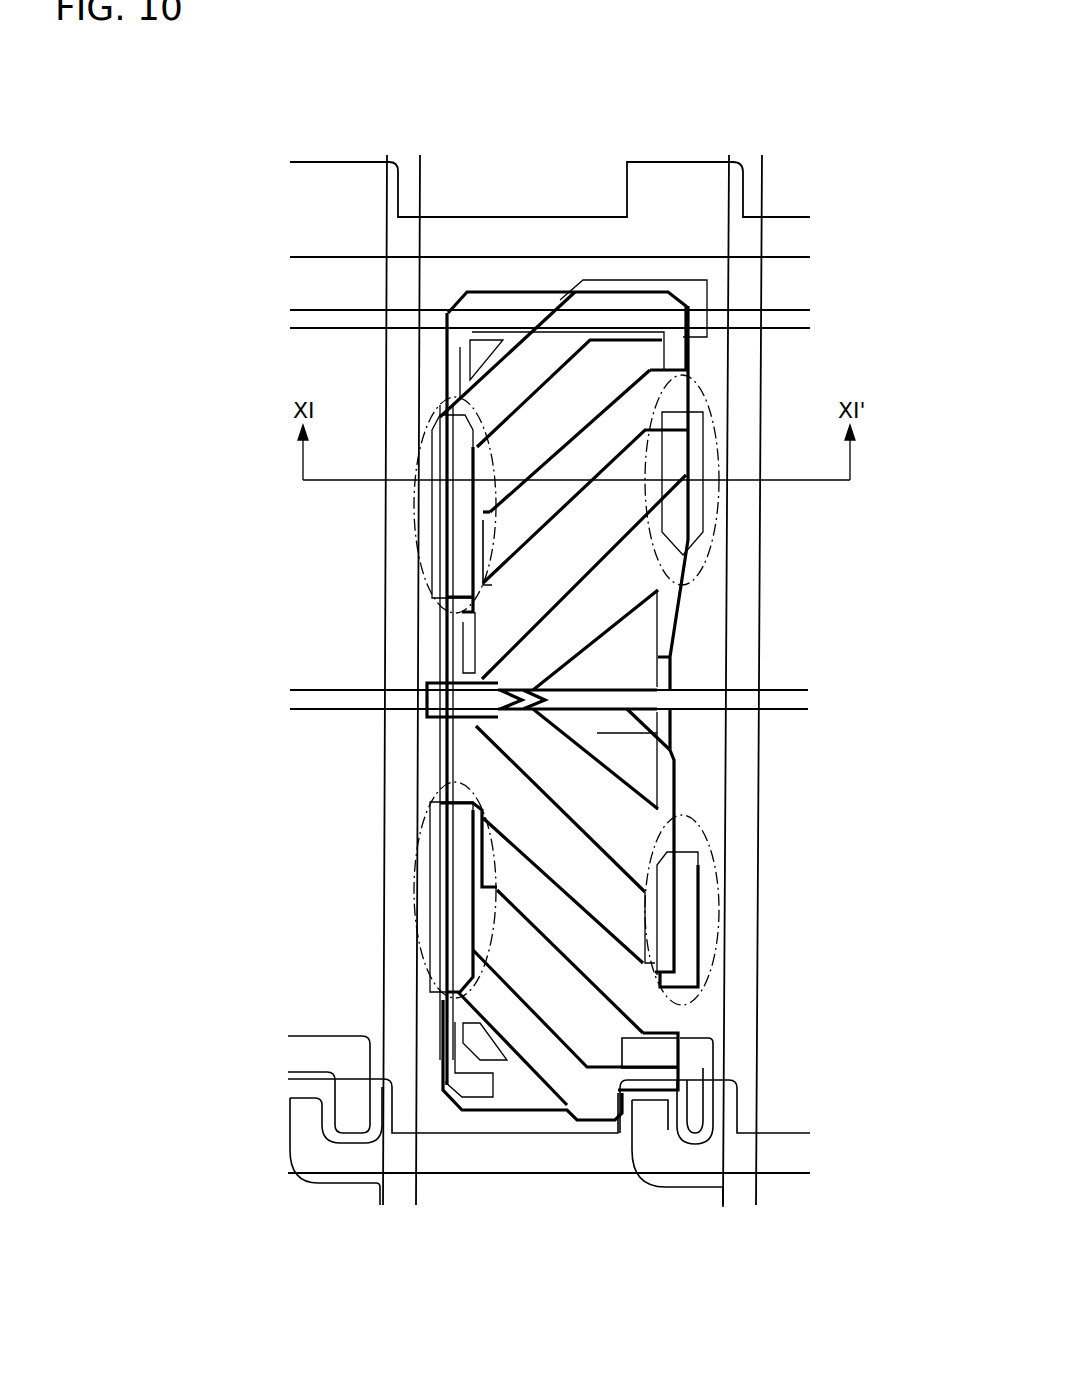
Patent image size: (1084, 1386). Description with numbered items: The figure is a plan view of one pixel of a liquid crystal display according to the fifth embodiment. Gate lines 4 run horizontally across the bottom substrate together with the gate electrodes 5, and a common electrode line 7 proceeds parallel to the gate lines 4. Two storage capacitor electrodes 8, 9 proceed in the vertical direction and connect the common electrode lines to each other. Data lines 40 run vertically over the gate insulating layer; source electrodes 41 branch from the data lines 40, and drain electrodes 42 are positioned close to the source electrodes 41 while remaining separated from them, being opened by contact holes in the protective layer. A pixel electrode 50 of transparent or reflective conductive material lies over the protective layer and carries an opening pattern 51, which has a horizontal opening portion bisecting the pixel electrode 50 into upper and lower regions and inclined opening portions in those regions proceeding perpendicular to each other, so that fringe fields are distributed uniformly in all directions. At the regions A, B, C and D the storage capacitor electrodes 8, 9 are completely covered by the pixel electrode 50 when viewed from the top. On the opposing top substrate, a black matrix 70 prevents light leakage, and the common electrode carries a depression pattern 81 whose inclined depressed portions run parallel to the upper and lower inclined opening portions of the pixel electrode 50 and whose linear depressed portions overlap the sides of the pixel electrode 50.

The gate lines 4 is at (785, 1176).
The gate electrodes 5 is at (740, 1110).
The common electrode line 7 is at (788, 330).
The storage capacitor electrode 8 is at (690, 656).
The storage capacitor electrode 9 is at (440, 730).
The data lines 40 is at (757, 915).
The source electrodes 41 is at (640, 1178).
The drain electrodes 42 is at (715, 1062).
The pixel electrode 50 is at (688, 593).
The opening pattern 51 is at (505, 530).
The black matrix 70 is at (478, 350).
The depression pattern 81 is at (518, 1068).
The region A is at (420, 565).
The region B is at (718, 520).
The region C is at (420, 862).
The region D is at (745, 870).